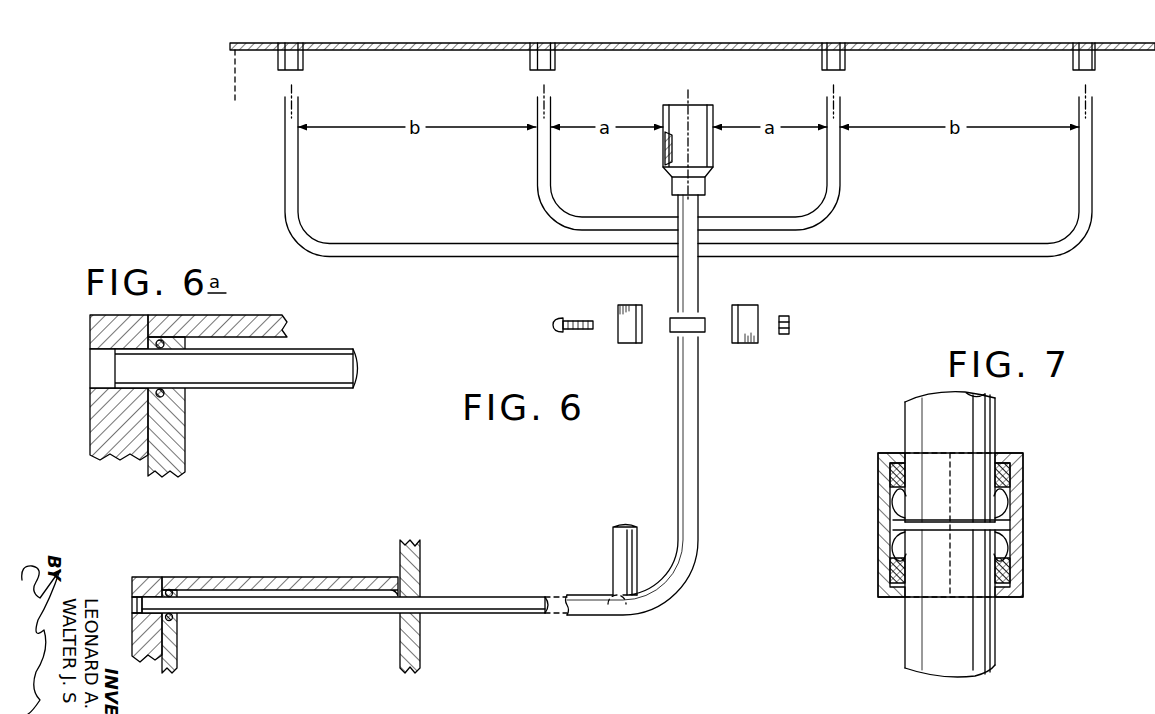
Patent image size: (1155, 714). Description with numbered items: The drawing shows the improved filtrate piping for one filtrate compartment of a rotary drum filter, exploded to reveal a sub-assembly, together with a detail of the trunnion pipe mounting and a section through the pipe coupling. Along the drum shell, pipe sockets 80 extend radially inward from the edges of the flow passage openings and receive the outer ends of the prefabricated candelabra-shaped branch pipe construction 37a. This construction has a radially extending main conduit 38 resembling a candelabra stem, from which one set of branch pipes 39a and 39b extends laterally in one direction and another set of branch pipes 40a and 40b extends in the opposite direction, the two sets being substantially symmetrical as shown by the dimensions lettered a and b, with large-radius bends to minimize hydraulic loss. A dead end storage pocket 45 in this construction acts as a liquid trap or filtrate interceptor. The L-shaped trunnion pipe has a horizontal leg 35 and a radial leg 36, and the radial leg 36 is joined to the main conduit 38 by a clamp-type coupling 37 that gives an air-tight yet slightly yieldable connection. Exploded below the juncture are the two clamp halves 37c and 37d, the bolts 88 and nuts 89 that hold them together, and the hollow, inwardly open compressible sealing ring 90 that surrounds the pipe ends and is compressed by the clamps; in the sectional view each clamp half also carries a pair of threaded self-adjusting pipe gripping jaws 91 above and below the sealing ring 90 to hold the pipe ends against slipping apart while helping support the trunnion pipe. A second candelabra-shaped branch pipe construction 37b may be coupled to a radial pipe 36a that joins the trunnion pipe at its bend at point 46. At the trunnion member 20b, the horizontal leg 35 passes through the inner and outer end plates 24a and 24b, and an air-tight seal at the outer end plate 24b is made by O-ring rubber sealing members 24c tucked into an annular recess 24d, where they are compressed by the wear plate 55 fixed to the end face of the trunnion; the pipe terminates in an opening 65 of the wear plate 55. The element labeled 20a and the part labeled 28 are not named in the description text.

In FIG. 6, the roof plate 28 is at (421, 50).
In FIG. 6, the pipe socket 80 is at (303, 60).
In FIG. 6, the branch pipe 39a is at (546, 180).
In FIG. 6, the branch pipe 39b is at (292, 186).
In FIG. 6, the branch pipe 40a is at (836, 173).
In FIG. 6, the branch pipe 40b is at (1089, 167).
In FIG. 6, the dead end storage pocket 45 is at (706, 155).
In FIG. 6, the main conduit 38 is at (681, 287).
In FIG. 7, the main conduit 38 is at (985, 441).
In FIG. 6, the coupling 37 is at (668, 338).
In FIG. 7, the coupling 37 is at (866, 549).
In FIG. 6, the candelabra-shaped branch pipe construction 37a is at (704, 258).
In FIG. 6, the second candelabra-shaped branch pipe construction 37b is at (661, 259).
In FIG. 6, the clamp half 37c is at (621, 341).
In FIG. 7, the clamp half 37c is at (878, 494).
In FIG. 6, the clamp half 37d is at (746, 343).
In FIG. 7, the clamp half 37d is at (1027, 493).
In FIG. 6, the bolt 88 is at (581, 318).
In FIG. 6, the nut 89 is at (786, 316).
In FIG. 6, the sealing ring 90 is at (705, 331).
In FIG. 7, the sealing ring 90 is at (1024, 519).
In FIG. 7, the pipe gripping jaws 91 is at (890, 477).
In FIG. 6, the pipe leg 36 is at (697, 437).
In FIG. 7, the pipe leg 36 is at (928, 614).
In FIG. 6, the radial pipe 36a is at (614, 567).
In FIG. 6, the point 46 is at (613, 606).
In FIG. 6, the pipe leg 35 is at (477, 600).
In FIG. 6A, the pipe leg 35 is at (300, 373).
In FIG. 6, the wear plate 55 is at (152, 577).
In FIG. 6A, the wear plate 55 is at (90, 330).
In FIG. 6, the opening 65 is at (133, 600).
In FIG. 6A, the upper plate 20a is at (232, 315).
In FIG. 6, the trunnion member 20b is at (262, 577).
In FIG. 6, the inner end plate 24a is at (400, 642).
In FIG. 6, the outer end plate 24b is at (178, 664).
In FIG. 6A, the outer end plate 24b is at (180, 463).
In FIG. 6, the O-ring rubber sealing member 24c is at (178, 636).
In FIG. 6A, the O-ring rubber sealing member 24c is at (185, 420).
In FIG. 6, the annular recess 24d is at (171, 590).
In FIG. 6A, the annular recess 24d is at (166, 341).